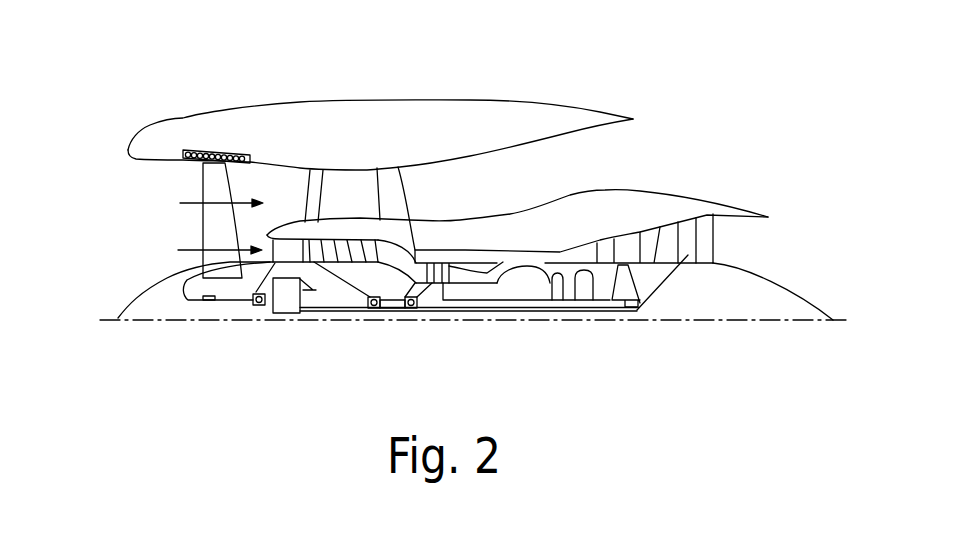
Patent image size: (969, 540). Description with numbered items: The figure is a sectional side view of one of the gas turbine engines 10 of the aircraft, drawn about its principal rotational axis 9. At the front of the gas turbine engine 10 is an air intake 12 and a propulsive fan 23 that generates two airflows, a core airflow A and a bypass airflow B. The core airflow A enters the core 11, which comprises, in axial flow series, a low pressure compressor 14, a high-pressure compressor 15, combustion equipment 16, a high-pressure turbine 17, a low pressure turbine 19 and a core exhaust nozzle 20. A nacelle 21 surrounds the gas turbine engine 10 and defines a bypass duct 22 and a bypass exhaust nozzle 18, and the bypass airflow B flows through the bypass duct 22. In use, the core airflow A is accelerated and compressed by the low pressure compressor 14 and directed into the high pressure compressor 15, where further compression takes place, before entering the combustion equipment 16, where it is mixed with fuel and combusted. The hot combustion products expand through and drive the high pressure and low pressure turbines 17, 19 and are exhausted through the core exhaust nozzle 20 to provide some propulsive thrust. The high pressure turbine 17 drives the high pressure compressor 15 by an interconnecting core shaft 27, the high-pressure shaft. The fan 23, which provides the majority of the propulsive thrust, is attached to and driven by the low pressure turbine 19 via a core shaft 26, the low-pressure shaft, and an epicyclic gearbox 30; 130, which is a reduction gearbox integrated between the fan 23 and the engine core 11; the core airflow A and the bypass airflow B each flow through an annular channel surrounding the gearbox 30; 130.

The principal rotational axis 9 is at (737, 323).
The gas turbine engine 10 is at (178, 116).
The core 11 is at (537, 236).
The air intake 12 is at (140, 178).
The low pressure compressor 14 is at (340, 243).
The high-pressure compressor 15 is at (467, 268).
The combustion equipment 16 is at (523, 270).
The high-pressure turbine 17 is at (580, 243).
The bypass exhaust nozzle 18 is at (724, 117).
The low pressure turbine 19 is at (692, 255).
The core exhaust nozzle 20 is at (772, 250).
The nacelle 21 is at (392, 114).
The bypass duct 22 is at (583, 158).
The propulsive fan 23 is at (208, 235).
The core shaft 26 is at (433, 312).
The interconnecting core shaft 27 is at (490, 272).
The epicyclic gearbox 30 is at (287, 303).
The epicyclic gearbox 130 is at (250, 343).